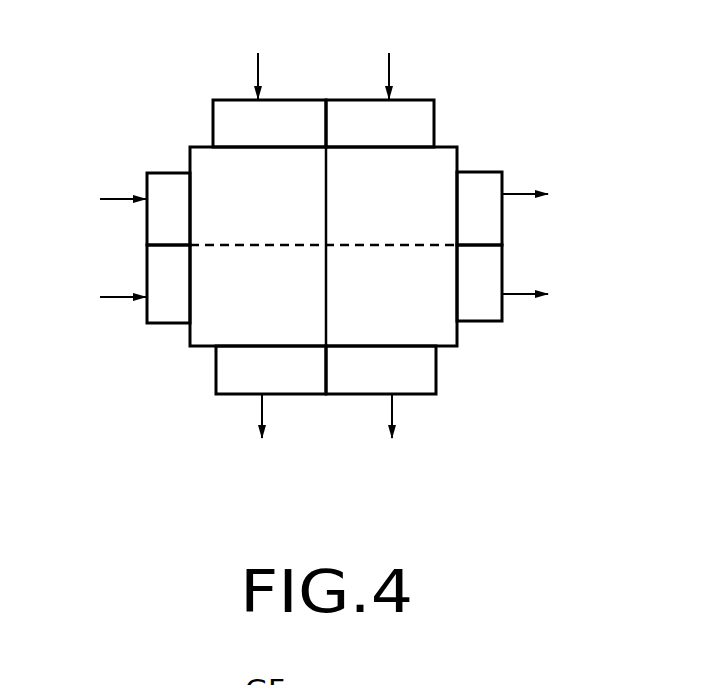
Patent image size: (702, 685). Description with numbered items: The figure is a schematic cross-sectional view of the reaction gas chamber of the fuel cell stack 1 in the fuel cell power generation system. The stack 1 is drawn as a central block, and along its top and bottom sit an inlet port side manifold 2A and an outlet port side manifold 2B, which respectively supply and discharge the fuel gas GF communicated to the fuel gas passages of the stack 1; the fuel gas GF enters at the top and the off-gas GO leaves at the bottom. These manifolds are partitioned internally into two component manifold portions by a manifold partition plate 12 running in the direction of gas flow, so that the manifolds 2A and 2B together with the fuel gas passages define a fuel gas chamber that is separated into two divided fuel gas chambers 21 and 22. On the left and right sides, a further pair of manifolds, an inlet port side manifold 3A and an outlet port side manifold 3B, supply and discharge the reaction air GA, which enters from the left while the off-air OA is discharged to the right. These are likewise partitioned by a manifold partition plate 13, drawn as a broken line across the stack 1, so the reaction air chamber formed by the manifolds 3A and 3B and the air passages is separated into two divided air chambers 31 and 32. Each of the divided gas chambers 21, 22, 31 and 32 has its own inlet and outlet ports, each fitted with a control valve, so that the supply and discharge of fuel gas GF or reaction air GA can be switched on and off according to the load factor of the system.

The stack 1 is at (196, 136).
The manifold partition plate 12 is at (325, 127).
The inlet port side manifold 2A is at (335, 86).
The outlet port side manifold 2B is at (326, 426).
The divided fuel gas chamber 21 is at (225, 373).
The divided fuel gas chamber 22 is at (358, 381).
The inlet port side manifold 3A is at (129, 214).
The outlet port side manifold 3B is at (515, 213).
The divided air chamber 31 is at (157, 224).
The divided air chamber 32 is at (157, 277).
The manifold partition plate 13 is at (482, 243).
The fuel gas GF is at (257, 68).
The reaction air GA is at (128, 198).
The off-air OA is at (527, 168).
The off-gas GO is at (263, 404).